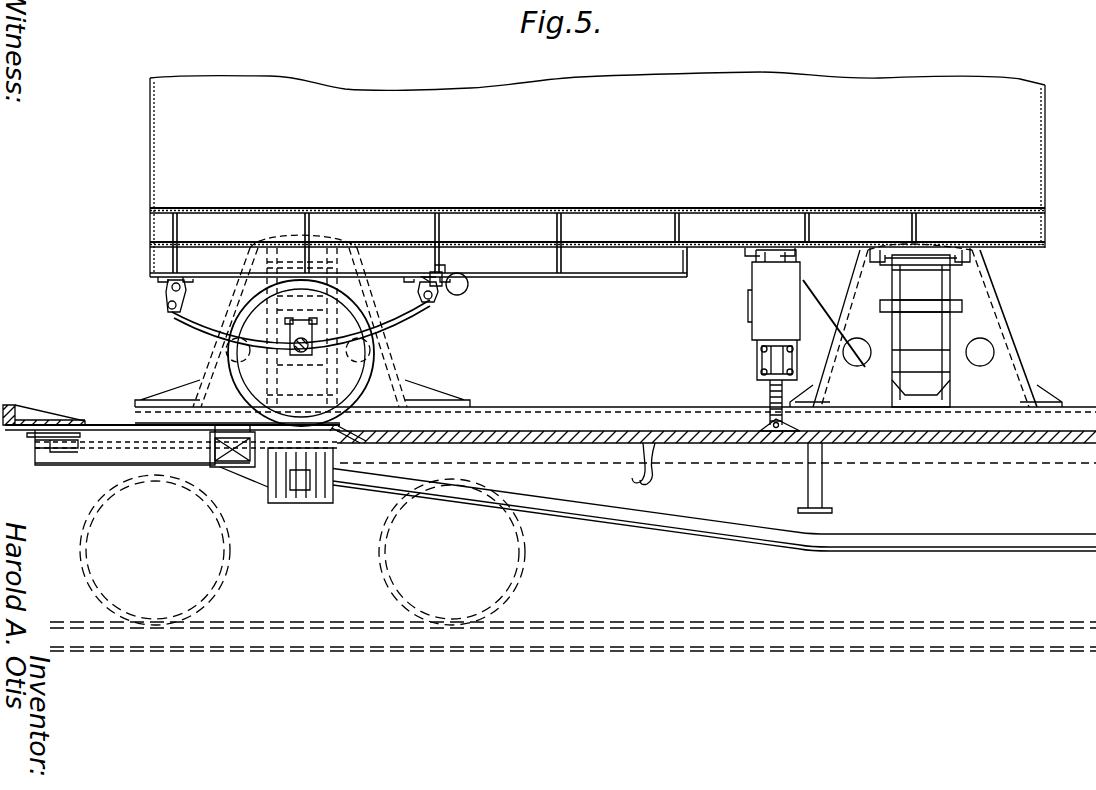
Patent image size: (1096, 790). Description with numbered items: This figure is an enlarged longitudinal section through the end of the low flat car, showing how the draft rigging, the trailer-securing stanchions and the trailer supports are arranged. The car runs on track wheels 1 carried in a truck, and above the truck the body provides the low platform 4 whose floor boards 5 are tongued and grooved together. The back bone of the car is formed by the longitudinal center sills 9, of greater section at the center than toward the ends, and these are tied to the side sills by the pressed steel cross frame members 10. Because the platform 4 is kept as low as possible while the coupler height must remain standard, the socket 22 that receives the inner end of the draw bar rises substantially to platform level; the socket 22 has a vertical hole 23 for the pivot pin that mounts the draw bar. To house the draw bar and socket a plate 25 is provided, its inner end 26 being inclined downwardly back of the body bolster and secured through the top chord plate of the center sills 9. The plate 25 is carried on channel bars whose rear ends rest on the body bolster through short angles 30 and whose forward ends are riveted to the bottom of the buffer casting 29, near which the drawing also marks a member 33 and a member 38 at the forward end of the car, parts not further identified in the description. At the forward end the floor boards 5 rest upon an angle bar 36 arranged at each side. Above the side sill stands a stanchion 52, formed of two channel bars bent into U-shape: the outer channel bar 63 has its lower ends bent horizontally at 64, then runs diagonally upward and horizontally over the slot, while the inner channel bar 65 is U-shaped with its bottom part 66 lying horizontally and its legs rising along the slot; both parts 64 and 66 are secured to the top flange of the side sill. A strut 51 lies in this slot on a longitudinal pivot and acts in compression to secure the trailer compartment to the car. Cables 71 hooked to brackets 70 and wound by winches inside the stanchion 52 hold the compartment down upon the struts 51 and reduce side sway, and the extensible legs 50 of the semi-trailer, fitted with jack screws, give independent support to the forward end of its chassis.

The track wheels 1 is at (215, 575).
The platform 4 is at (548, 425).
The floor boards 5 is at (656, 448).
The longitudinal sills 9 is at (928, 534).
The cross frame members 10 is at (268, 490).
The socket 22 is at (235, 468).
The vertical hole 23 is at (230, 372).
The plate 25 is at (105, 425).
The inner end of plate 26 is at (352, 428).
The buffer casting 29 is at (18, 405).
The short angles 30 is at (338, 444).
The plate 33 is at (62, 405).
The angle bar 36 is at (38, 450).
The bar 38 is at (32, 437).
The extensible legs 50 is at (752, 305).
The struts 51 is at (185, 295).
The stanchions 52 is at (398, 352).
The outer channel bar 63 is at (200, 345).
The horizontal lower ends 64 is at (175, 404).
The inner channel bar 65 is at (322, 372).
The bottom part 66 is at (318, 402).
The brackets 70 is at (463, 280).
The cables 71 is at (412, 305).